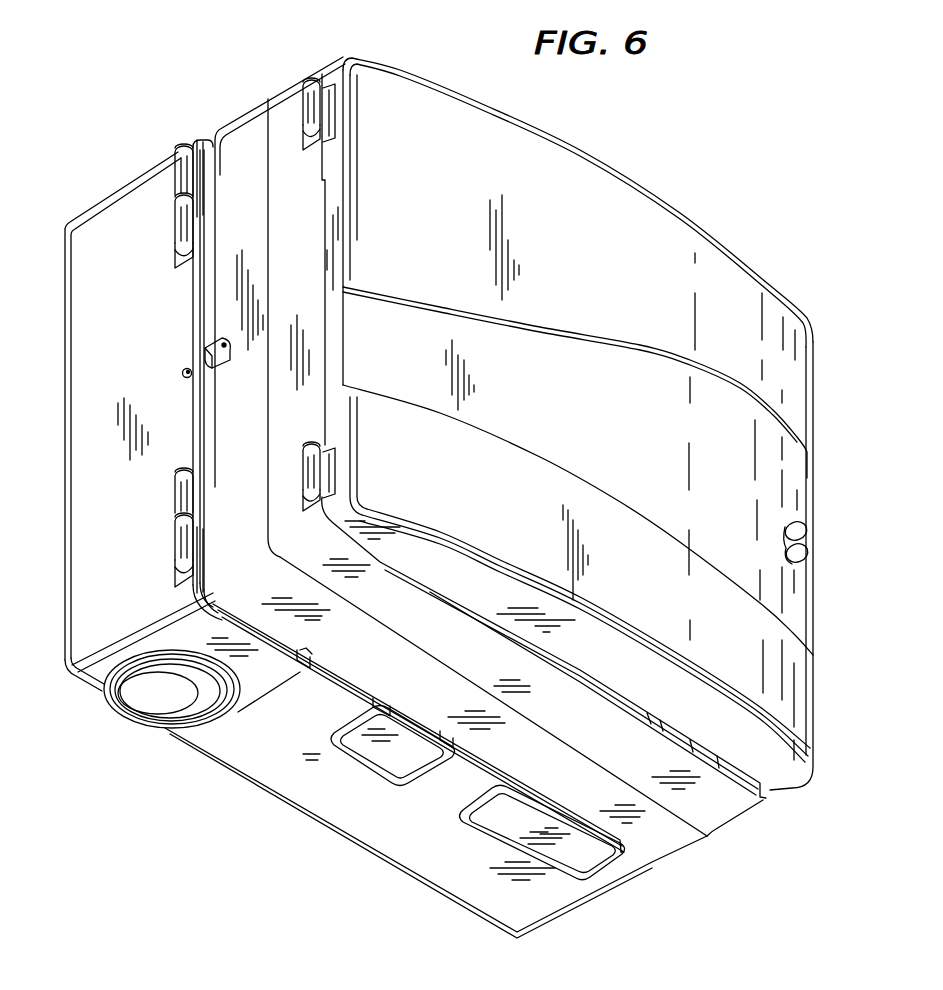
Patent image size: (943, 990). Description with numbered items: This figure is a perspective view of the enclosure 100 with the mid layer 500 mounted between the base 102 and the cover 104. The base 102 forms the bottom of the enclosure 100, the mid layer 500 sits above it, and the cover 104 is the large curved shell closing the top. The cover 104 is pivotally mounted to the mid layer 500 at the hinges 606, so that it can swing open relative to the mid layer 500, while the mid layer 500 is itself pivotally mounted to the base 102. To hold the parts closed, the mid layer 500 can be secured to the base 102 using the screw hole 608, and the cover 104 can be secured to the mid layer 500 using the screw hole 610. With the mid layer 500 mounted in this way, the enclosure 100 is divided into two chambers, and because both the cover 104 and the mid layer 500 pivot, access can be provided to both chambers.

The enclosure 100 is at (157, 72).
The base 102 is at (308, 817).
The cover 104 is at (816, 382).
The mid layer 500 is at (690, 848).
The hinges 606 is at (318, 78).
The screw hole 608 is at (183, 373).
The screw hole 610 is at (812, 550).